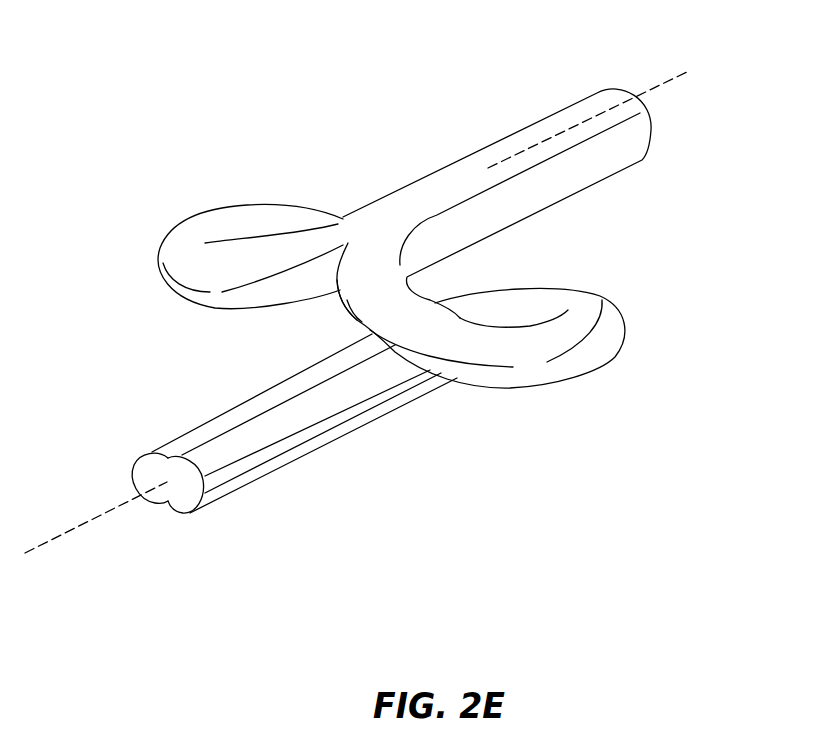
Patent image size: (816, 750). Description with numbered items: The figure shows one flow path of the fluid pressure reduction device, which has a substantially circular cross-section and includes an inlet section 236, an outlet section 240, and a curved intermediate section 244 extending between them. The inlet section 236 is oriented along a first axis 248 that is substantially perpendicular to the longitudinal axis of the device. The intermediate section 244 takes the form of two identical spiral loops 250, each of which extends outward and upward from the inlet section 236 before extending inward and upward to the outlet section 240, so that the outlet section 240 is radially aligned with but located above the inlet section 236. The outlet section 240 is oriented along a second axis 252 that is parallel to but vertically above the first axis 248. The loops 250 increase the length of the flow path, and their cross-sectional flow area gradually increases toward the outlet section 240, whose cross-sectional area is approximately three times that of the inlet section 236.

The inlet section 236 is at (222, 499).
The outlet section 240 is at (650, 167).
The curved intermediate section 244 is at (648, 352).
The first axis 248 is at (70, 532).
The spiral loop 250 is at (257, 220).
The second axis 252 is at (662, 80).